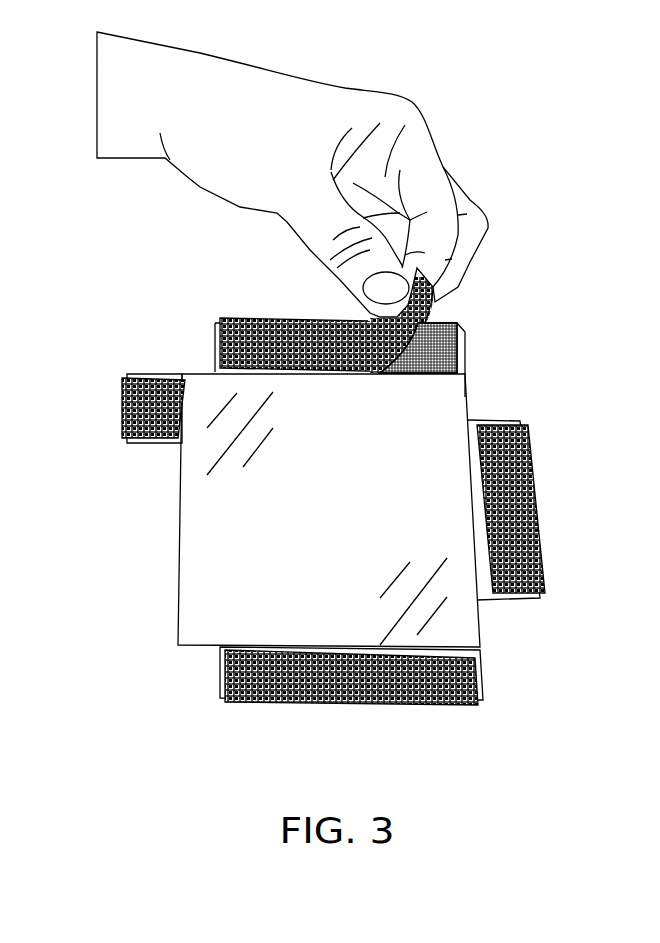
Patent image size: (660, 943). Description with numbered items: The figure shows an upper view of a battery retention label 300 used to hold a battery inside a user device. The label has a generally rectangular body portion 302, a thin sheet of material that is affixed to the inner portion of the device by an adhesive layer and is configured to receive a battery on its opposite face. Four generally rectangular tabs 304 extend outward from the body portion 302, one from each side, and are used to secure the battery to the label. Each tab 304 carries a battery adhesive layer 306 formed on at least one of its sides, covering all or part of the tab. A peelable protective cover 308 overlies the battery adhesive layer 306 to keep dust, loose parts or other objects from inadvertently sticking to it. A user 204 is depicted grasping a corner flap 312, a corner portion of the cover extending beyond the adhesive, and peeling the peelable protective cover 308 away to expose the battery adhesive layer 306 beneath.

The user 204 is at (425, 122).
The battery retention label 300 is at (565, 199).
The body portion 302 is at (325, 521).
The tabs 304 is at (125, 412).
The battery adhesive layer 306 is at (438, 362).
The peelable protective cover 308 is at (275, 330).
The corner flap 312 is at (436, 287).